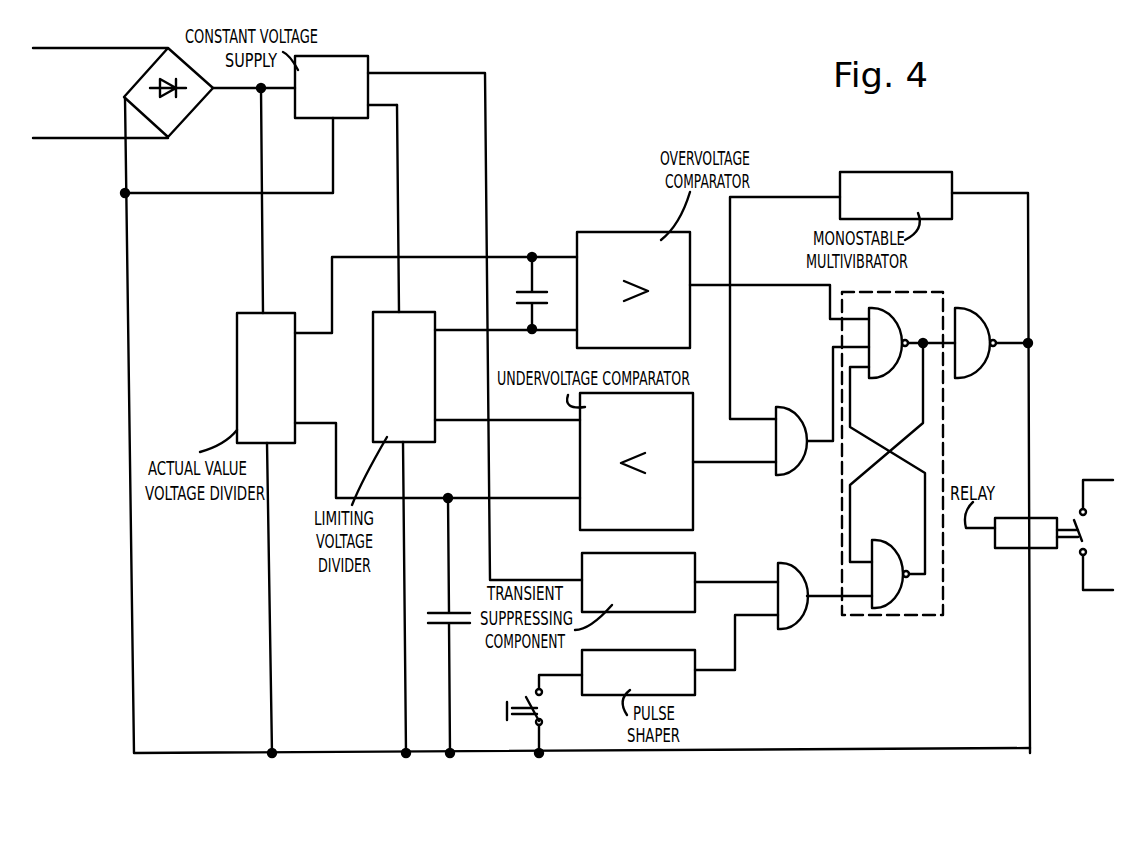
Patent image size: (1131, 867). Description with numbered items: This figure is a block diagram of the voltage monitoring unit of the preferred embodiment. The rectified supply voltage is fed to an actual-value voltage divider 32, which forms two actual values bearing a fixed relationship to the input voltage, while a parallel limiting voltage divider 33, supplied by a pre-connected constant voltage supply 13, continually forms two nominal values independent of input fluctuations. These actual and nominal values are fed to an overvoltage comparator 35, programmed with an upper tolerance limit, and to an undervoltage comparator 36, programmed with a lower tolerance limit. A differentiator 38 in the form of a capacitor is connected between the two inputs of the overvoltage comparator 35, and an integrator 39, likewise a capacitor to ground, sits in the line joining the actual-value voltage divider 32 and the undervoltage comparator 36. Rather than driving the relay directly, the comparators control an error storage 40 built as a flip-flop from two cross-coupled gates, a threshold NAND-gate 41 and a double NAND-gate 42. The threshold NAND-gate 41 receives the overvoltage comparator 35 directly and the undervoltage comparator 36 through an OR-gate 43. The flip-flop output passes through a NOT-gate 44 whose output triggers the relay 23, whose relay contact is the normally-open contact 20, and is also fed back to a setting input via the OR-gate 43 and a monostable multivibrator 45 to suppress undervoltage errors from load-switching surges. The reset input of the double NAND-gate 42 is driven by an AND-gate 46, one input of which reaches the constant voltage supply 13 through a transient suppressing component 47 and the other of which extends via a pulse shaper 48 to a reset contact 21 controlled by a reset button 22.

The constant voltage supply 13 is at (357, 68).
The normally-open contact 20 is at (1085, 535).
The reset contact 21 is at (540, 713).
The reset button 22 is at (508, 703).
The relay 23 is at (1037, 525).
The actual-value voltage divider 32 is at (253, 388).
The limiting voltage divider 33 is at (387, 388).
The overvoltage comparator 35 is at (632, 252).
The undervoltage comparator 36 is at (700, 518).
The differentiator 38 is at (535, 275).
The integrator 39 is at (445, 622).
The error storage 40 is at (922, 473).
The threshold NAND-gate 41 is at (888, 330).
The double NAND-gate 42 is at (888, 590).
The OR-gate 43 is at (788, 423).
The NOT-gate 44 is at (970, 335).
The monostable multivibrator 45 is at (937, 183).
The AND-gate 46 is at (795, 612).
The transient suppressing component 47 is at (675, 598).
The pulse shaper 48 is at (695, 688).